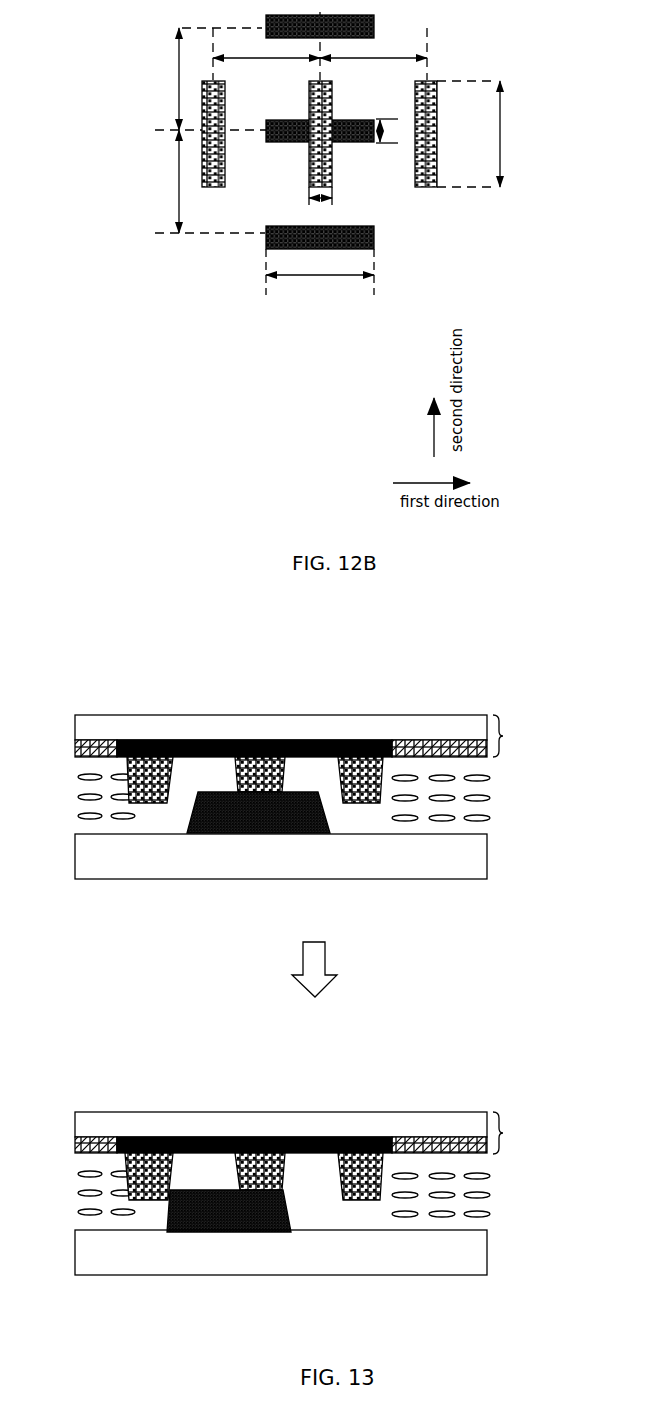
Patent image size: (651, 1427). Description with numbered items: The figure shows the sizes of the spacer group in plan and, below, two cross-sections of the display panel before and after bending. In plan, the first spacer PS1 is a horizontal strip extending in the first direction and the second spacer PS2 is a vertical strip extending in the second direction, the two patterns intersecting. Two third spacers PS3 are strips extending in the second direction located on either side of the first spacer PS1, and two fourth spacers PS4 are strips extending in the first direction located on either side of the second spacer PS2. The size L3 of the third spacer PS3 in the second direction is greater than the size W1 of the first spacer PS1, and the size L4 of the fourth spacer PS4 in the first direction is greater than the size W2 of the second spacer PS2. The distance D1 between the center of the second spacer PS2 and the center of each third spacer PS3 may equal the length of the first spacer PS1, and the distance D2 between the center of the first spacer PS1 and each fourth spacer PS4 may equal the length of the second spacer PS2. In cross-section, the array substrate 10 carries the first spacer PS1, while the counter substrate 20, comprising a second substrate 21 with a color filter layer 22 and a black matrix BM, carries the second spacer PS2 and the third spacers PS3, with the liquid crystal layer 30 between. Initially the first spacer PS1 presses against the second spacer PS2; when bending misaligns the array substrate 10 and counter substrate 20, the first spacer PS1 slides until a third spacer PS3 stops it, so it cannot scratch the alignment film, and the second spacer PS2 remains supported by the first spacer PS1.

In FIG. 12B, the first spacer PS1 is at (362, 142).
In FIG. 13, the first spacer PS1 is at (248, 1012).
In FIG. 12B, the second spacer PS2 is at (309, 163).
In FIG. 13, the second spacer PS2 is at (260, 973).
In FIG. 12B, the third spacer PS3 is at (425, 188).
In FIG. 13, the third spacer PS3 is at (140, 795).
In FIG. 12B, the fourth spacer PS4 is at (272, 237).
In FIG. 12B, the distance between the center of the second spacer and the center of each third sp D1 is at (320, 57).
In FIG. 12B, the distance between the center of the first spacer and the center of each fourth sp D2 is at (164, 130).
In FIG. 12B, the size of the first spacer in the second direction W1 is at (392, 131).
In FIG. 12B, the size of the second spacer in the first direction W2 is at (320, 205).
In FIG. 12B, the size of the third spacer in the second direction L3 is at (483, 134).
In FIG. 12B, the size of the fourth spacer in the first direction L4 is at (320, 275).
In FIG. 13, the black matrix BM is at (345, 745).
In FIG. 13, the array substrate 10 is at (487, 866).
In FIG. 13, the counter substrate 20 is at (510, 934).
In FIG. 13, the second substrate 21 is at (460, 715).
In FIG. 13, the color filter layer 22 is at (422, 748).
In FIG. 13, the liquid crystal layer 30 is at (490, 797).